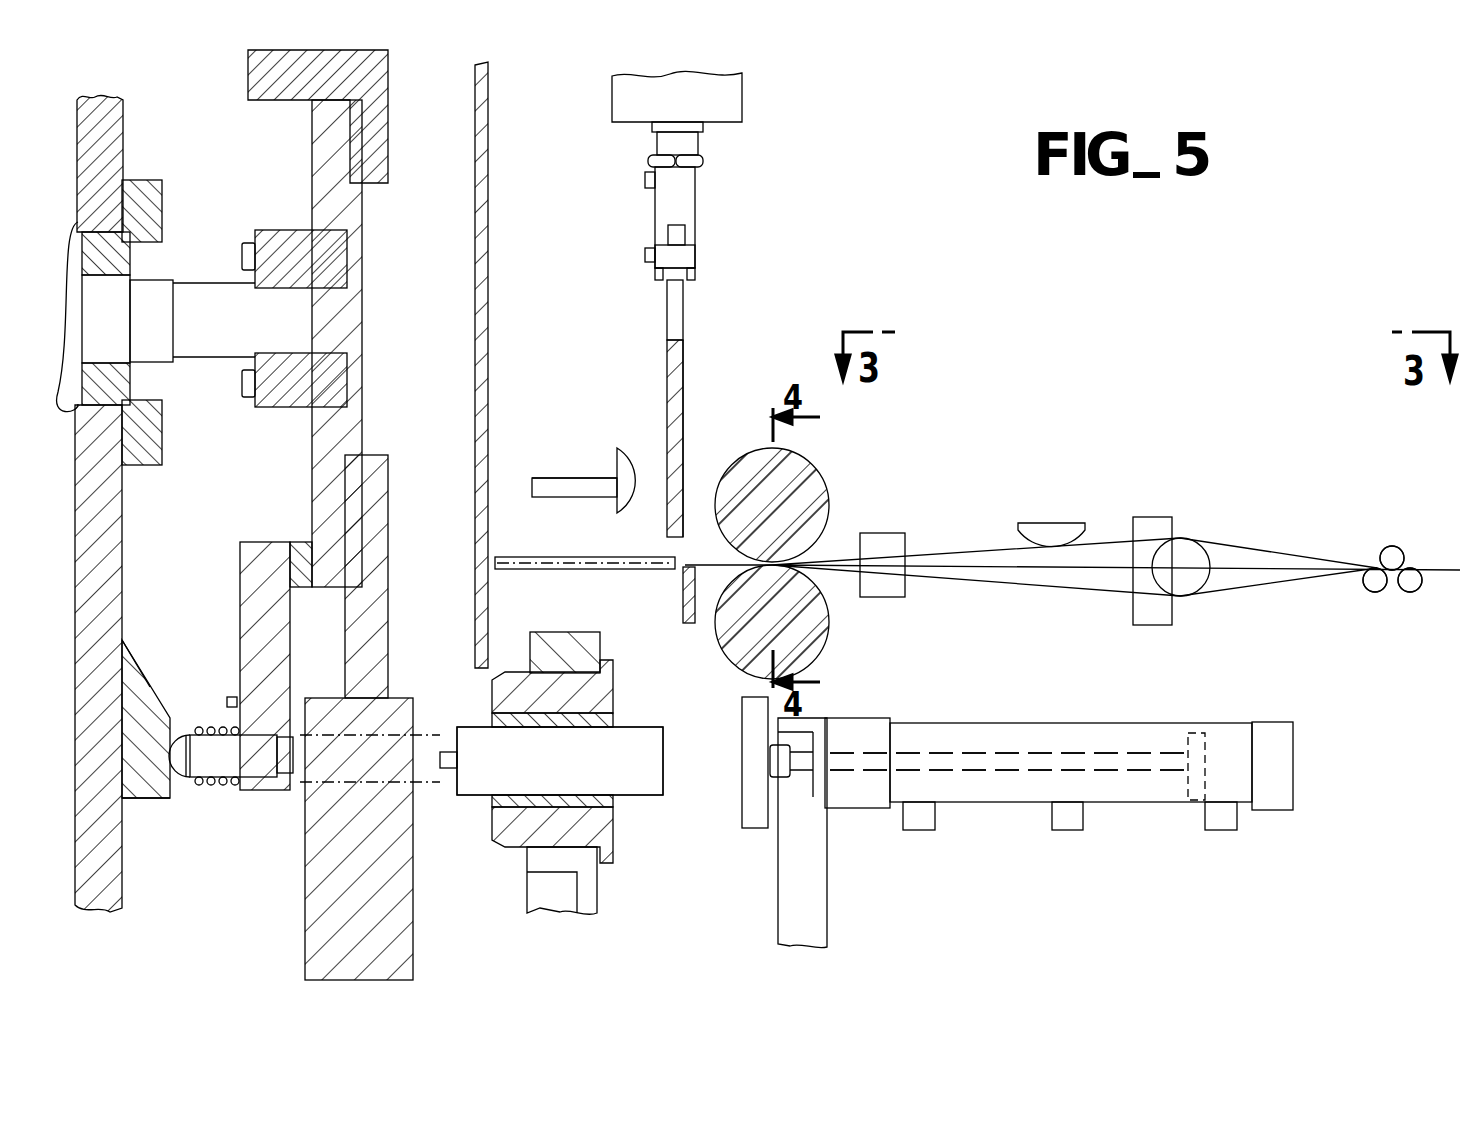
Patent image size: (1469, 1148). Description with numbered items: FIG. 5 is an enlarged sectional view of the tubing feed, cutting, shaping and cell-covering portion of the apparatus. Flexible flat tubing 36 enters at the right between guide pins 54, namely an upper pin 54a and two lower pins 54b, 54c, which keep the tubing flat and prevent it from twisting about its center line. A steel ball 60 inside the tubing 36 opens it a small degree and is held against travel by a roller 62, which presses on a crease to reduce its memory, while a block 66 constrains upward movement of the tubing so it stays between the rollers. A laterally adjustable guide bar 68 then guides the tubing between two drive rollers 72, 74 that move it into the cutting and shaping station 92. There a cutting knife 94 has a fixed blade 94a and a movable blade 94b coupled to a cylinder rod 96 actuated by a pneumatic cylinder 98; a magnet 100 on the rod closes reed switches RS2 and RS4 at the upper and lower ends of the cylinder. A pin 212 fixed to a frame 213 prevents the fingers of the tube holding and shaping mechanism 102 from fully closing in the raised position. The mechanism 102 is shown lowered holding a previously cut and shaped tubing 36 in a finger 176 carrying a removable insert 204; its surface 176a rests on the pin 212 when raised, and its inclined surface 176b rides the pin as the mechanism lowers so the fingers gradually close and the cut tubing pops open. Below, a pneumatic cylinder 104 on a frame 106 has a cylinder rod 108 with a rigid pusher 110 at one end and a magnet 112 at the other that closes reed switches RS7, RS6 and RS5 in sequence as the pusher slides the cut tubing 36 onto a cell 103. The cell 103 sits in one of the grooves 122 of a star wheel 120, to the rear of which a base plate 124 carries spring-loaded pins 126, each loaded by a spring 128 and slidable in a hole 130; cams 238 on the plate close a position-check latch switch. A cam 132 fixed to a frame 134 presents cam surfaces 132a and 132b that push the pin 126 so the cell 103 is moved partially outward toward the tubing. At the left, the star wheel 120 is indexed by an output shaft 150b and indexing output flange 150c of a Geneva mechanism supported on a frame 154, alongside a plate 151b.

The frame 154 is at (125, 133).
The output shaft 150b is at (213, 345).
The indexing output flange 150c is at (312, 175).
The disc plate 151b is at (472, 322).
The frame 134 is at (123, 903).
The cam 132 is at (133, 800).
The cam surface 132a is at (130, 658).
The cam surface 132b is at (170, 800).
The base plate 124 is at (240, 570).
The cams 238 is at (228, 696).
The spring 128 is at (210, 728).
The pin 126 is at (231, 778).
The hole 130 is at (262, 738).
The grooves 122 is at (300, 795).
The star wheel 120 is at (305, 925).
The cell 103 is at (440, 783).
The tubing 36 is at (560, 557).
The inclined surface 176b is at (573, 632).
The surface 176a is at (613, 700).
The insert 204 is at (613, 715).
The tube holding and shaping mechanism 102 is at (613, 830).
The finger 176 is at (598, 910).
The fixed blade 94a is at (690, 624).
The movable blade 94b is at (685, 378).
The cylinder rod 96 is at (684, 306).
The cutting knife 94 is at (697, 442).
The pneumatic cylinder 98 is at (697, 196).
The magnet 100 is at (697, 256).
The reed switch RS2 is at (645, 180).
The reed switch RS4 is at (645, 255).
The cutting and shaping station 92 is at (590, 432).
The pin 212 is at (565, 478).
The frame 213 is at (628, 463).
The drive roller 72 is at (815, 476).
The drive roller 74 is at (825, 636).
The guide bar 68 is at (905, 533).
The block 66 is at (1055, 523).
The roller 62 is at (1170, 517).
The steel ball 60 is at (1192, 542).
The guide pins 54 is at (1383, 540).
The upper pin 54a is at (1398, 547).
The lower pin 54b is at (1370, 593).
The lower pin 54c is at (1410, 594).
The rigid pusher 110 is at (752, 830).
The frame 106 is at (833, 900).
The pneumatic cylinder 104 is at (1120, 724).
The cylinder rod 108 is at (987, 752).
The magnet 112 is at (1200, 733).
The reed switch RS7 is at (926, 830).
The reed switch RS6 is at (1067, 830).
The reed switch RS5 is at (1216, 830).